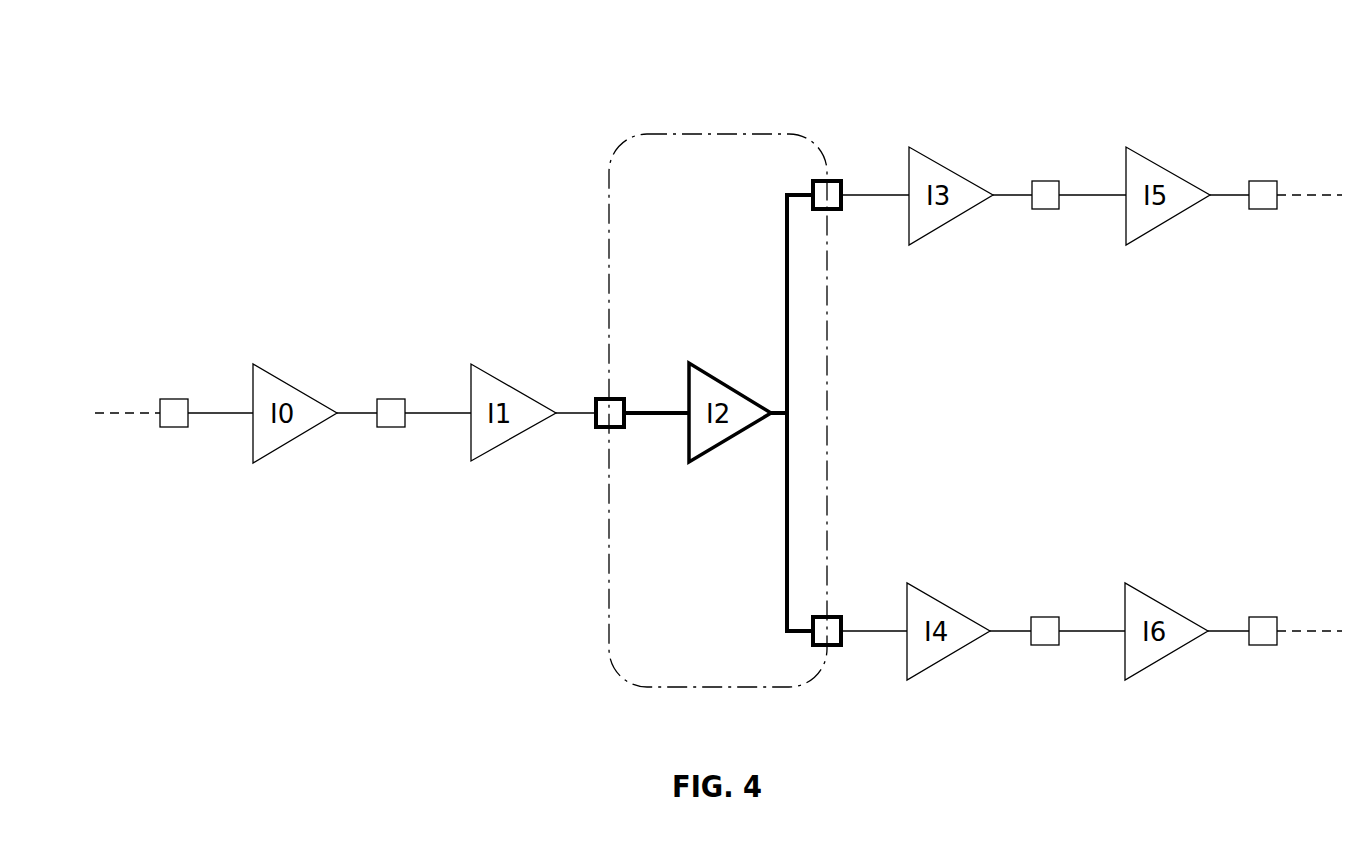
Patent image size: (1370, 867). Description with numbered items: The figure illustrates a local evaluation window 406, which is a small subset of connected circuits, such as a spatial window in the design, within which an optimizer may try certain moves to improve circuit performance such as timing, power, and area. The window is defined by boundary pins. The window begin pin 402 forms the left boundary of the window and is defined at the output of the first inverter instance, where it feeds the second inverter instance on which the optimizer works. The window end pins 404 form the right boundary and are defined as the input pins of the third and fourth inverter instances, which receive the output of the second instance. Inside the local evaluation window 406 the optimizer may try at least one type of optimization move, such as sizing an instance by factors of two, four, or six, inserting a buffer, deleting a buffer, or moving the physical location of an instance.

The window begin pin 402 is at (596, 400).
The window end pins 404 is at (843, 203).
The local evaluation window 406 is at (800, 134).